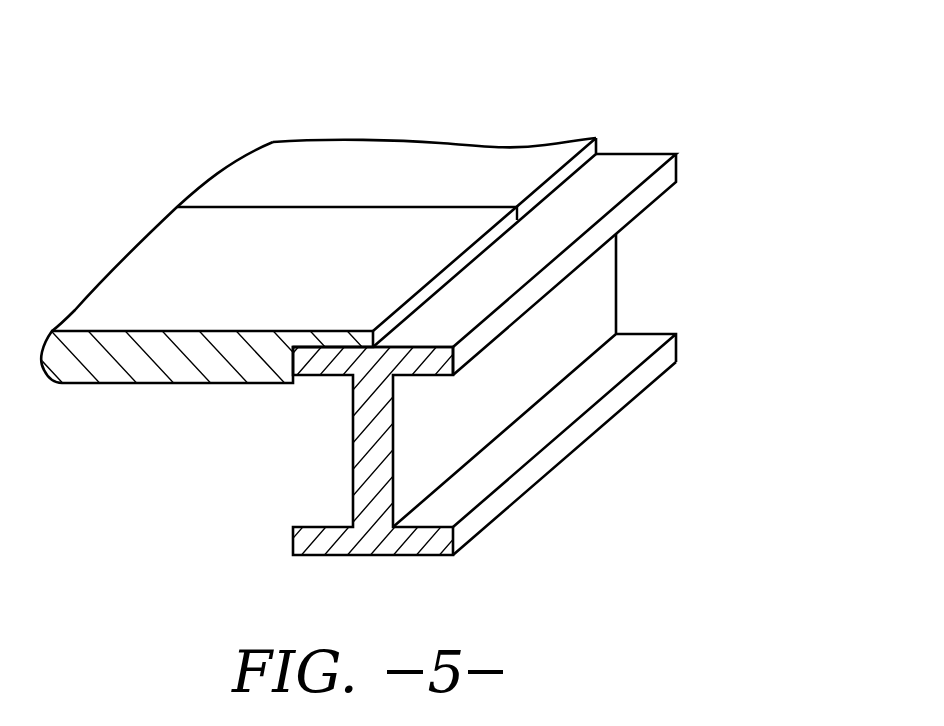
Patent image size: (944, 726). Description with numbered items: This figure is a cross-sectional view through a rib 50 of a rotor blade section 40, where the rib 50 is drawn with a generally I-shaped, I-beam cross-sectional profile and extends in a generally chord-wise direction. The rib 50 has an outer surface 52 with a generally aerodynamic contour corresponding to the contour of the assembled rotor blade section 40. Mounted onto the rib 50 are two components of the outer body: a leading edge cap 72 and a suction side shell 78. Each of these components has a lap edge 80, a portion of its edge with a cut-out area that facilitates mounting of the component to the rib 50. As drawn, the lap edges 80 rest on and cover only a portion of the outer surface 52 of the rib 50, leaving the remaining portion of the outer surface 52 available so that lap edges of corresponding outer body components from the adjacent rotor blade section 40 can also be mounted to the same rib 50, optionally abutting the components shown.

The rotor blade section 40 is at (677, 79).
The rib 50 is at (681, 264).
The outer surface 52 is at (628, 168).
The leading edge cap 72 is at (163, 243).
The suction side shell 78 is at (257, 168).
The lap edge 80 is at (390, 155).